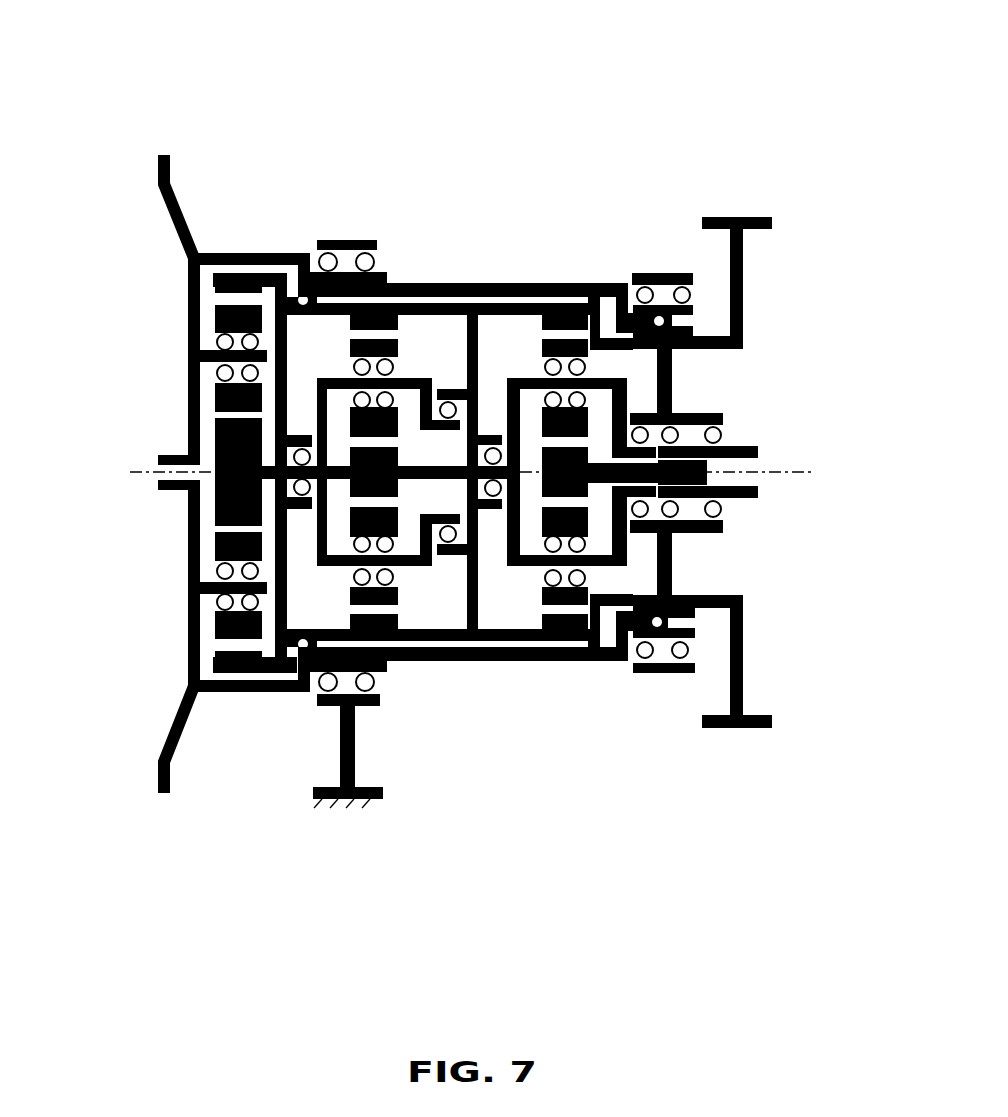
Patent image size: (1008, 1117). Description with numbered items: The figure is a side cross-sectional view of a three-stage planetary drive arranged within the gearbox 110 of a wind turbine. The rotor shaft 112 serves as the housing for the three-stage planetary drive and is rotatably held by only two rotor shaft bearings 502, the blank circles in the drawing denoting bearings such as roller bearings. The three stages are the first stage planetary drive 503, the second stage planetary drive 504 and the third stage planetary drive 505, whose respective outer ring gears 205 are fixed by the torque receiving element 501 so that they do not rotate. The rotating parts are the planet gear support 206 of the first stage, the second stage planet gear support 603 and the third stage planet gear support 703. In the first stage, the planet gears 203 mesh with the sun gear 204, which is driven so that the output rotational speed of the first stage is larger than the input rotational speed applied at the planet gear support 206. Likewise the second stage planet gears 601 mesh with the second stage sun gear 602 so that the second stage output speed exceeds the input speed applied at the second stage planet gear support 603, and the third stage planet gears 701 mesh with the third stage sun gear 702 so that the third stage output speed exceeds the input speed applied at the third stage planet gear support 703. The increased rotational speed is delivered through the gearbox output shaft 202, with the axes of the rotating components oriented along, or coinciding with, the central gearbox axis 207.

The gearbox 110 is at (691, 38).
The rotor shaft 112 is at (167, 742).
The gearbox output shaft 202 is at (707, 468).
The planet gears 203 is at (213, 328).
The sun gear 204 is at (217, 512).
The outer ring gears 205 is at (247, 672).
The planet gear support 206 is at (213, 363).
The central gearbox axis 207 is at (778, 470).
The torque receiving element 501 is at (743, 330).
The rotor shaft bearings 502 is at (645, 293).
The first stage planetary drive 503 is at (244, 820).
The second stage planetary drive 504 is at (363, 838).
The third stage planetary drive 505 is at (564, 820).
The second stage planet gears 601 is at (398, 345).
The second stage sun gear 602 is at (398, 458).
The second stage planet gear support 603 is at (320, 377).
The third stage planet gears 701 is at (542, 600).
The third stage sun gear 702 is at (640, 525).
The third stage planet gear support 703 is at (510, 377).